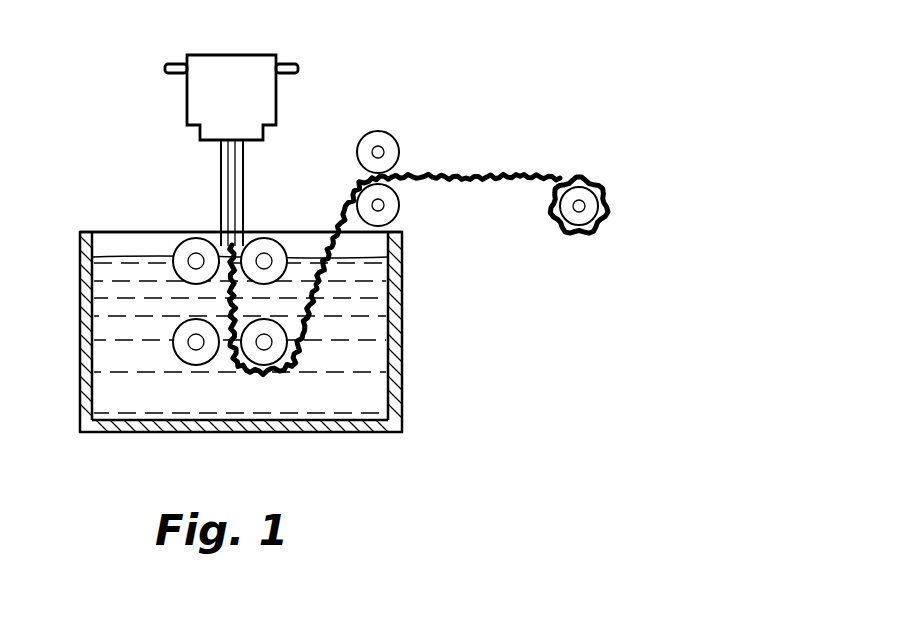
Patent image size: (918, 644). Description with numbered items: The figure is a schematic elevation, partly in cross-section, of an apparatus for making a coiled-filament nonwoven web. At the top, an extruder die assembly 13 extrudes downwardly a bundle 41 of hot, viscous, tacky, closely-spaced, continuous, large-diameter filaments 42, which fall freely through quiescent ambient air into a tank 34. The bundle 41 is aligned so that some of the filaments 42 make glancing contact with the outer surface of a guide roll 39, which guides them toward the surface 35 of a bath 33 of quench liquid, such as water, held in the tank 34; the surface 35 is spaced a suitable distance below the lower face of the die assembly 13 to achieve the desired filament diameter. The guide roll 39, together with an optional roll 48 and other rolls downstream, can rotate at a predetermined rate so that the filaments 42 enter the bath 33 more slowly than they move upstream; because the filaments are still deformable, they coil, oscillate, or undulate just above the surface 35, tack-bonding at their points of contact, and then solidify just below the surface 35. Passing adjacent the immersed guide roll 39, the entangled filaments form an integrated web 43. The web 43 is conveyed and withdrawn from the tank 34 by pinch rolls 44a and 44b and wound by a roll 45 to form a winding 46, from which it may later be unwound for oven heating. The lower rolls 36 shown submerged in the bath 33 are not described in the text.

The extruder die assembly 13 is at (250, 103).
The bath of quench liquid 33 is at (113, 305).
The tank 34 is at (402, 333).
The surface of the quench liquid 35 is at (113, 253).
The lower guide rollers 36 is at (262, 354).
The guide roll 39 is at (270, 248).
The bundle 41 is at (210, 174).
The filaments 42 is at (235, 153).
The integrated web 43 is at (402, 242).
The pinch roll 44a is at (390, 160).
The pinch roll 44b is at (390, 208).
The roll 45 is at (585, 212).
The winding 46 is at (553, 215).
The optional roll 48 is at (195, 247).